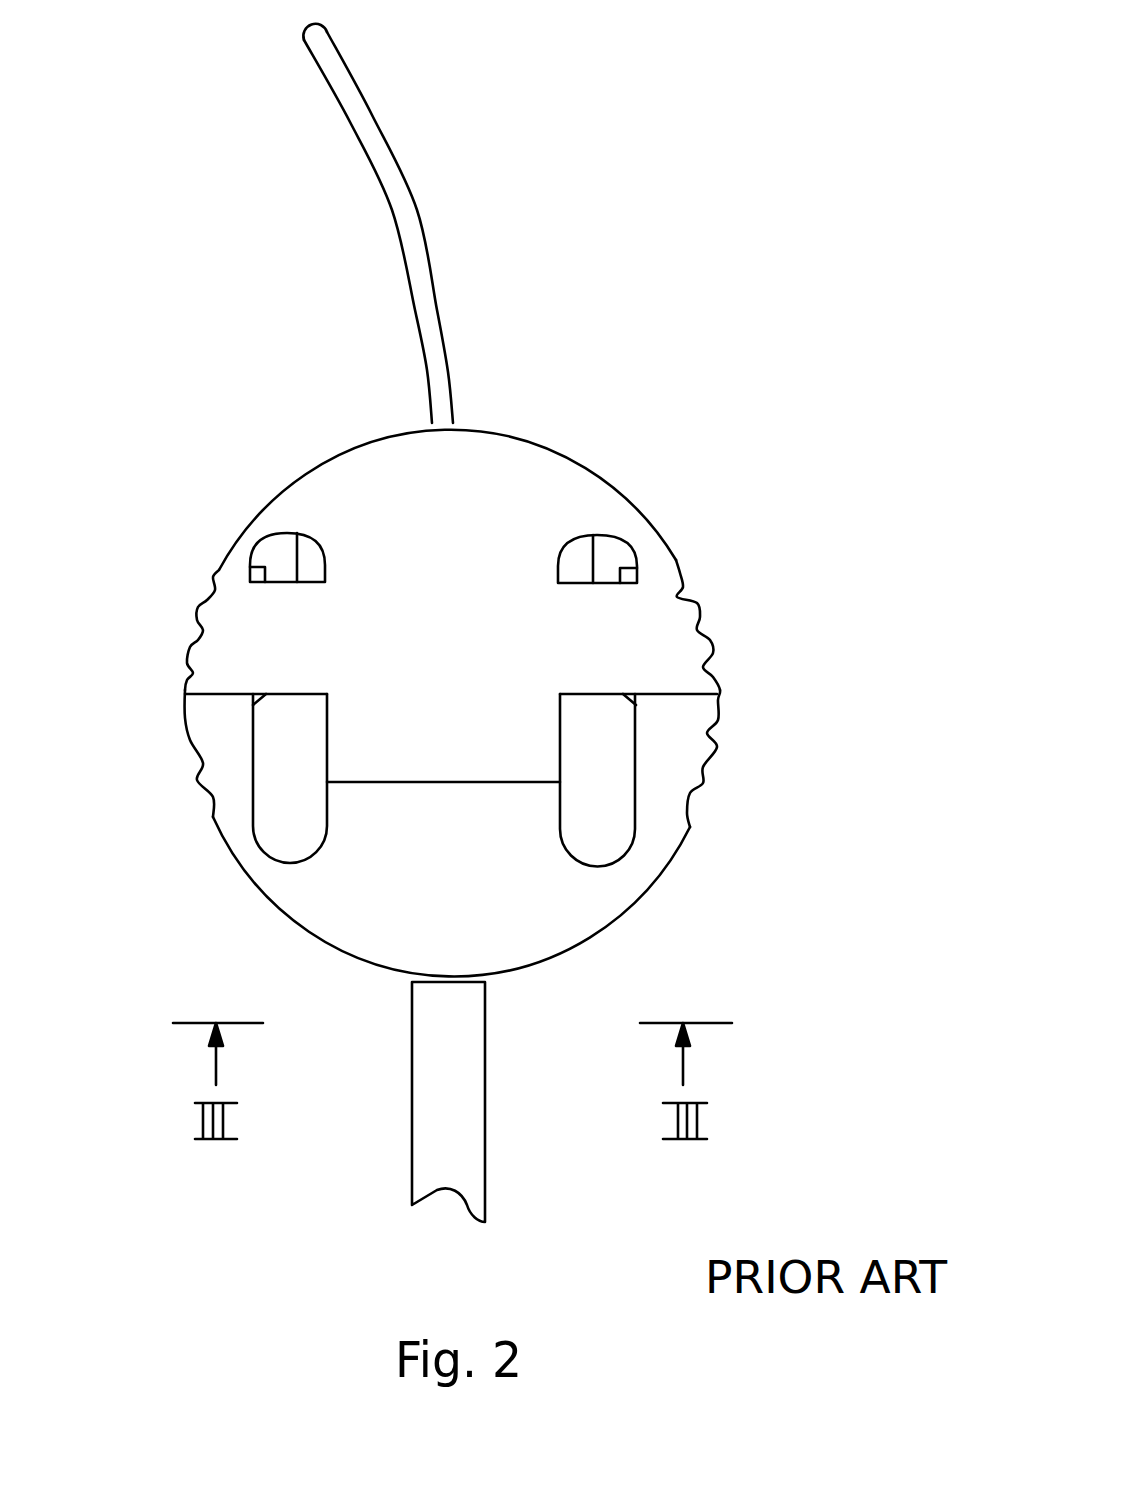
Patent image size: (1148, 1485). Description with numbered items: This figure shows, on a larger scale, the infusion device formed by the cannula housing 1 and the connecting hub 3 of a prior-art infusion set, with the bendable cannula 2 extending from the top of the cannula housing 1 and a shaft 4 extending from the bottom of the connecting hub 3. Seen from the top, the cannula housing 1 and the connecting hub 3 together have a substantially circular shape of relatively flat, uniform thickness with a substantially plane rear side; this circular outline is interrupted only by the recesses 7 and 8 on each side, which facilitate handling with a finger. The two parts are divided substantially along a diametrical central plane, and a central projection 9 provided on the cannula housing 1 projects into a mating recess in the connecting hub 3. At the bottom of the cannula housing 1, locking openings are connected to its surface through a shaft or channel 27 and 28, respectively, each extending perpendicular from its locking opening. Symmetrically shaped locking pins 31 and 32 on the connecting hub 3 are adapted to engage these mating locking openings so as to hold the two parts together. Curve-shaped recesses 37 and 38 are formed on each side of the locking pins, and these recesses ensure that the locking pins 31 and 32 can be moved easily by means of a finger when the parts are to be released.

The cannula housing 1 is at (550, 483).
The cannula 2 is at (413, 248).
The connecting hub 3 is at (636, 873).
The shaft 4 is at (458, 1163).
The recess 7 is at (196, 633).
The recess 8 is at (188, 767).
The central projection 9 is at (362, 718).
The shaft or channel 27 is at (580, 545).
The shaft or channel 28 is at (307, 552).
The locking pin 31 is at (608, 564).
The locking pin 32 is at (280, 556).
The curve-shaped recess 37 is at (620, 818).
The curve-shaped recess 38 is at (290, 823).